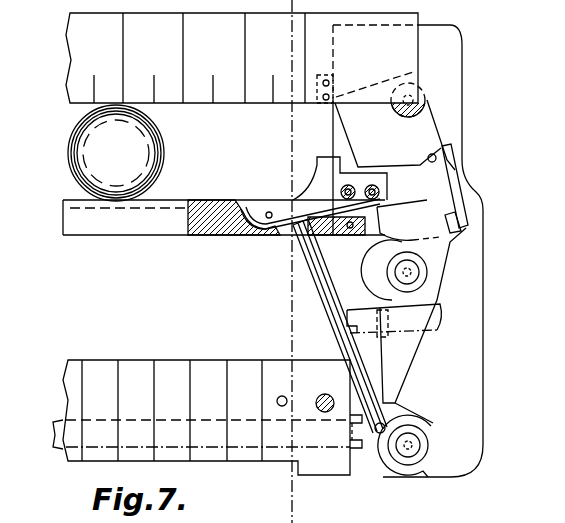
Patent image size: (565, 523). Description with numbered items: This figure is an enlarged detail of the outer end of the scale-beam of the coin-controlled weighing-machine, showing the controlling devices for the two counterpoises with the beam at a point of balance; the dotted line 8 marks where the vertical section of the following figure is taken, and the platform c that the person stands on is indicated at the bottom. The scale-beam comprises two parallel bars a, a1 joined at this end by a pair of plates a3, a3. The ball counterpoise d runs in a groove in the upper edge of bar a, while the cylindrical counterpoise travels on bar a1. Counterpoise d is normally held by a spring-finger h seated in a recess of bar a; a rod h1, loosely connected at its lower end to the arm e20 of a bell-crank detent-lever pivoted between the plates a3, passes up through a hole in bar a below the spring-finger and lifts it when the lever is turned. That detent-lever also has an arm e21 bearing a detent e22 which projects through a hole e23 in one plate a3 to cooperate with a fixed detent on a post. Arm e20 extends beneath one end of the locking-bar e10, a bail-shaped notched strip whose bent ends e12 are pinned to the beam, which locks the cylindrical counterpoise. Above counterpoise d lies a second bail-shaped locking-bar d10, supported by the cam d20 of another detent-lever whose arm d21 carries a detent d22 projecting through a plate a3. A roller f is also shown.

The section line 8— 8 is at (288, 13).
The platform c is at (293, 516).
The counterpoise d is at (165, 153).
The locking-bar d10 is at (255, 98).
The cam d20 is at (423, 110).
The arm d21 is at (457, 197).
The detent d22 is at (450, 224).
The scale-beam bar a is at (177, 202).
The scale-beam bar a1 is at (120, 358).
The plate a3 is at (477, 358).
The spring-finger h is at (252, 206).
The rod h1 is at (313, 273).
The roller f is at (430, 267).
The locking-bar e10 is at (97, 448).
The bent end of locking-bar e12 is at (385, 428).
The arm of detent-lever e20 is at (375, 467).
The arm of detent-lever e21 is at (407, 398).
The detent e22 is at (387, 322).
The hole e23 is at (412, 320).